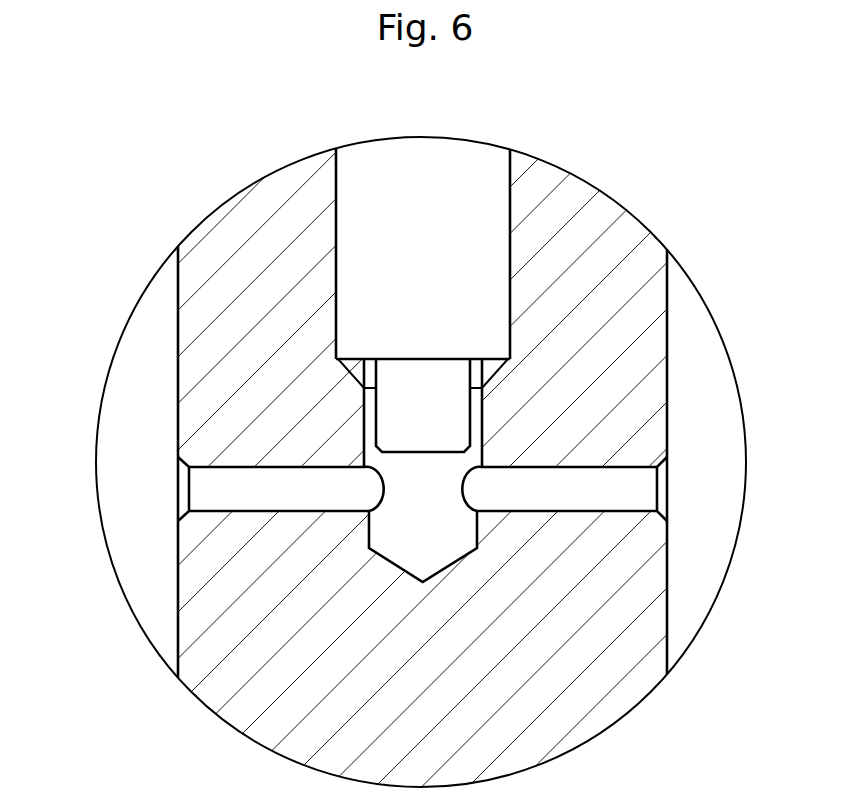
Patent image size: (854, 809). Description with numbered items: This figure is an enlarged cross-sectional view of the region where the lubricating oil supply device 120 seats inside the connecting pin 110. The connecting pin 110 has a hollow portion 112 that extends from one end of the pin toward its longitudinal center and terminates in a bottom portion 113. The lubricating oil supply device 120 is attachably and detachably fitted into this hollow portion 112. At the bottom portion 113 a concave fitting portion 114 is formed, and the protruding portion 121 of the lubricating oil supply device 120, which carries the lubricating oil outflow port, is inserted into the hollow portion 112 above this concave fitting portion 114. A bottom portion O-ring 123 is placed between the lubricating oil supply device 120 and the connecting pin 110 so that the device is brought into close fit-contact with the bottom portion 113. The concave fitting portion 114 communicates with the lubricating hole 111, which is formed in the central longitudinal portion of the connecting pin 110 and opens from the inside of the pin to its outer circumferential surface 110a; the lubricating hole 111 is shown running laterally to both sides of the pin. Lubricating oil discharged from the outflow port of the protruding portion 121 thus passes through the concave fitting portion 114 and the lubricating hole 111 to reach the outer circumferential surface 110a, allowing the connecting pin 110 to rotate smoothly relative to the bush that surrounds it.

The connecting pin 110 is at (235, 268).
The outer circumferential surface 110a is at (178, 338).
The lubricating hole 111 is at (265, 500).
The hollow portion 112 is at (336, 235).
The bottom portion 113 is at (340, 365).
The concave fitting portion 114 is at (450, 526).
The lubricating oil supply device 120 is at (477, 177).
The protruding portion 121 is at (455, 425).
The bottom portion O-ring 123 is at (497, 370).